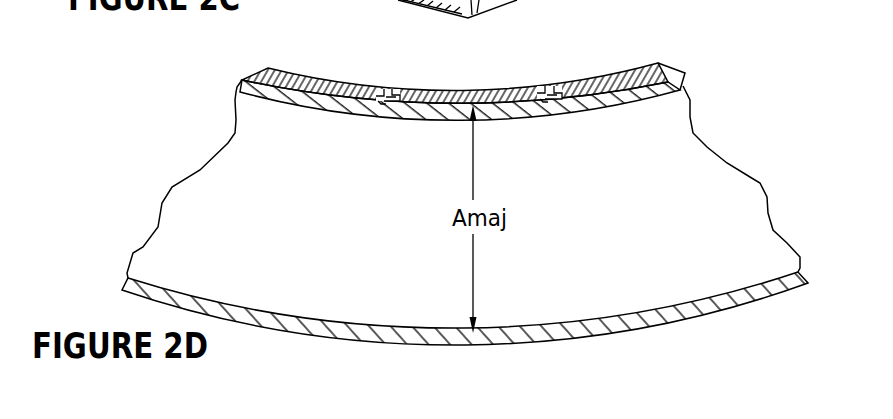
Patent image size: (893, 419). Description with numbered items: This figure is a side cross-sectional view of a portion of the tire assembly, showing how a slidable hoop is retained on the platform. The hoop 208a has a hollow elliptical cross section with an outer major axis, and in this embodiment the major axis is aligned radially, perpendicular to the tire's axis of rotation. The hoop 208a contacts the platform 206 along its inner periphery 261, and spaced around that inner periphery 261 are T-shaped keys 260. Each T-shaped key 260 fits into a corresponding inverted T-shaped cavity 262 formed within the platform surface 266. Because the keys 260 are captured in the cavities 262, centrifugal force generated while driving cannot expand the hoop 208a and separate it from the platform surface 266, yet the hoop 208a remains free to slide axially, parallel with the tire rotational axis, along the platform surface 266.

The platform 206 is at (503, 83).
The platform surface 266 is at (668, 74).
The inner periphery 261 is at (678, 93).
The inverted T-shaped cavity 262 is at (393, 90).
The T-shaped key 260 is at (378, 101).
The hoop 208a is at (770, 148).